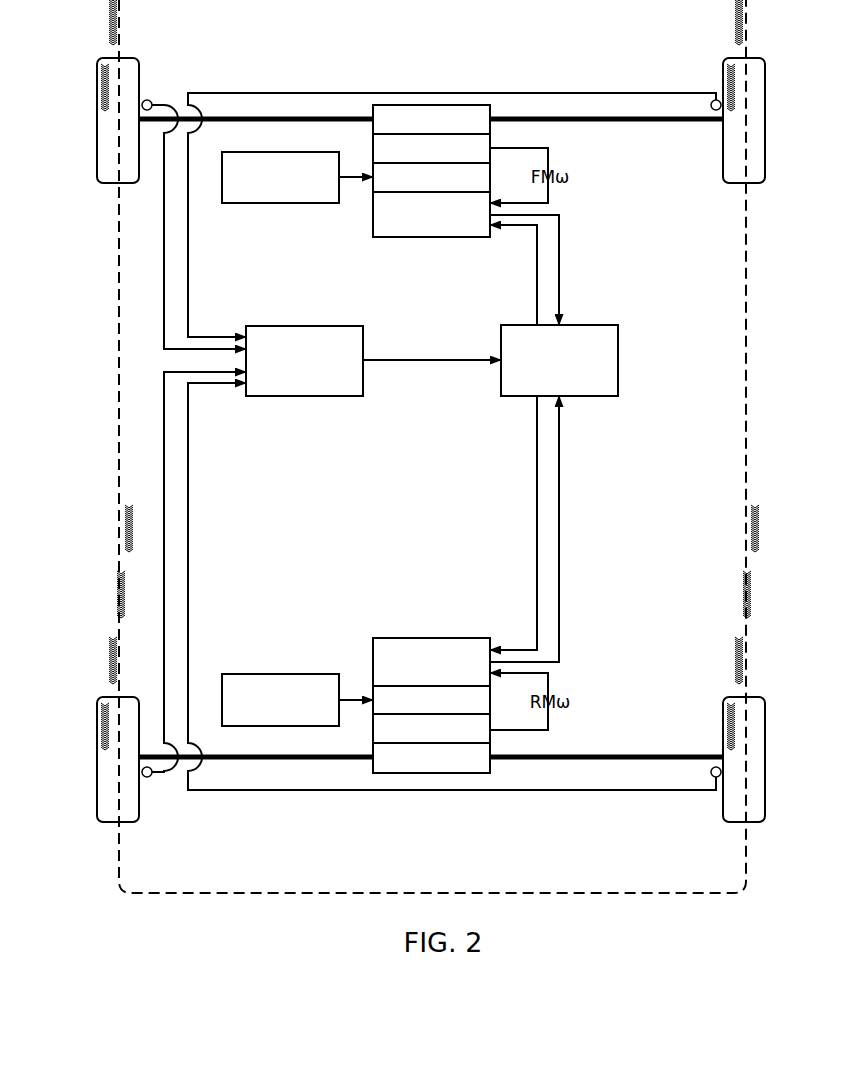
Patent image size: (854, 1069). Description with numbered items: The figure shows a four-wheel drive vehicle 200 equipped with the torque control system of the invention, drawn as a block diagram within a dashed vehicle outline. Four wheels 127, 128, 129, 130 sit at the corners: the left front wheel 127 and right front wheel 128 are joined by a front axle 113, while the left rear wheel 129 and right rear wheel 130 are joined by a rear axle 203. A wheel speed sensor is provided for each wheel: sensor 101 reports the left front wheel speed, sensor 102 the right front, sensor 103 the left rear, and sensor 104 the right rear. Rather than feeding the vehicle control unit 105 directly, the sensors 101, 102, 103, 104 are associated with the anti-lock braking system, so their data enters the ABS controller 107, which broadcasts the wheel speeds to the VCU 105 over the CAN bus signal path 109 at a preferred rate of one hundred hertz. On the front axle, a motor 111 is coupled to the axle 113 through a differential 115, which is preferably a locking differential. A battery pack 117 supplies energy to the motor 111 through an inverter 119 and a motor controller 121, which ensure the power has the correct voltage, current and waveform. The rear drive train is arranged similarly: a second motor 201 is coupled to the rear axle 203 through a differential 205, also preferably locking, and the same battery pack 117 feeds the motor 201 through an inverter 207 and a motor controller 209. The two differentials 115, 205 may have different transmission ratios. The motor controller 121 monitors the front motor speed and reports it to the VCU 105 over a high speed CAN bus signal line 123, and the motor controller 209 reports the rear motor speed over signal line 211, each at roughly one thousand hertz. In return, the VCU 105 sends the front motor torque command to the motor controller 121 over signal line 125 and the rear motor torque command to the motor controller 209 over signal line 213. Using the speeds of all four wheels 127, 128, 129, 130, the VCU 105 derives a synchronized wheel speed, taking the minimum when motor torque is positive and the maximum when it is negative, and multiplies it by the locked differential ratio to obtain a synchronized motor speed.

The vehicle 200 is at (106, 457).
The wheel speed sensor 101 is at (149, 100).
The wheel speed sensor 102 is at (711, 105).
The wheel speed sensor 103 is at (150, 778).
The wheel speed sensor 104 is at (709, 772).
The vehicle control unit 105 is at (597, 397).
The ABS controller 107 is at (303, 326).
The signal path 109 is at (408, 362).
The motor 111 is at (373, 149).
The axle 113 is at (607, 122).
The differential 115 is at (432, 105).
The battery pack 117 is at (280, 205).
The inverter 119 is at (373, 186).
The motor controller 121 is at (432, 237).
The signal line 123 is at (560, 292).
The signal line 125 is at (536, 298).
The wheel 127 is at (128, 58).
The wheel 128 is at (735, 58).
The wheel 129 is at (108, 697).
The wheel 130 is at (738, 697).
The second motor 201 is at (373, 718).
The axle 203 is at (620, 757).
The differential 205 is at (432, 773).
The inverter 207 is at (373, 688).
The motor controller 209 is at (432, 638).
The signal line 211 is at (560, 565).
The signal line 213 is at (536, 500).